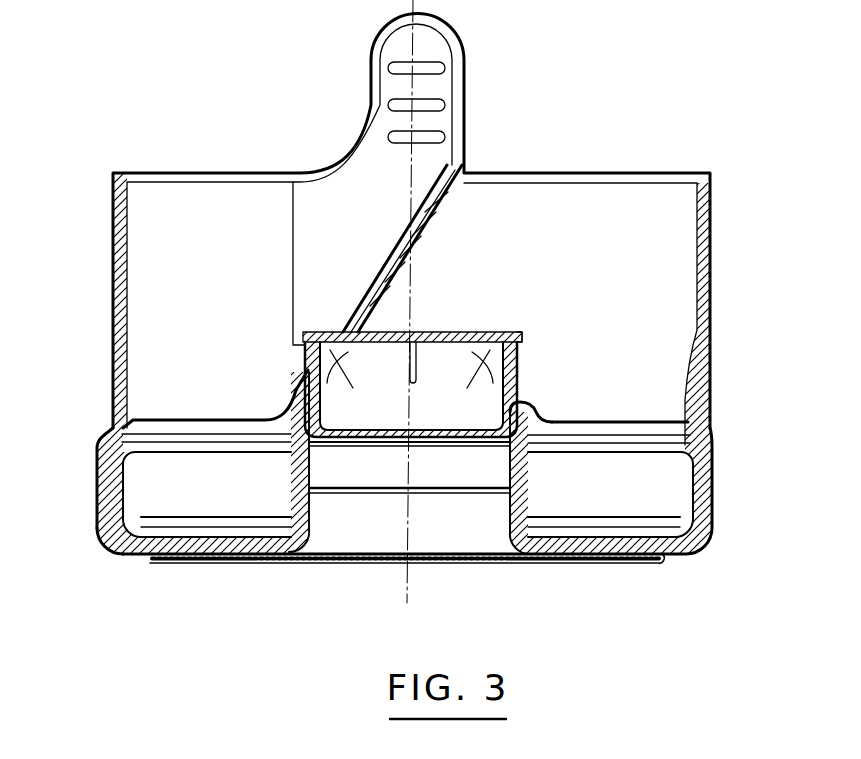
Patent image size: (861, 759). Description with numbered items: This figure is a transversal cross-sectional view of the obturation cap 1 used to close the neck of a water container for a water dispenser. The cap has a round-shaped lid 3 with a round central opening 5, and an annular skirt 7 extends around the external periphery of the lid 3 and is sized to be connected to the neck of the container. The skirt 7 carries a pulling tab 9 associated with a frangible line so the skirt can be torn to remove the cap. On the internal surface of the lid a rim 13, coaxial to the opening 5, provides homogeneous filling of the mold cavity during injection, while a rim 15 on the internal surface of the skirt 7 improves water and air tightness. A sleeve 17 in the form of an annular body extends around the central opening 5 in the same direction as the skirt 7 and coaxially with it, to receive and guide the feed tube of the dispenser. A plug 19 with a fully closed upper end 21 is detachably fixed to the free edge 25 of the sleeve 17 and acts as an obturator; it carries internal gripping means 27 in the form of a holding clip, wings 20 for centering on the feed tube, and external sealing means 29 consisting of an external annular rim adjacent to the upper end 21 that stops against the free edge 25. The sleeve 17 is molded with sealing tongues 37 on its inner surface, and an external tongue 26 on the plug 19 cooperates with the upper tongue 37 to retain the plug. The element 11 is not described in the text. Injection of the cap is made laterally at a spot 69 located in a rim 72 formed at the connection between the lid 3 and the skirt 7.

The obturation cap 1 is at (187, 71).
The lid 3 is at (623, 563).
The central opening 5 is at (359, 563).
The annular skirt 7 is at (710, 272).
The pulling tab 9 is at (437, 87).
The inclined strut 11 is at (437, 212).
The rim 13 is at (245, 522).
The rim 15 is at (140, 428).
The sleeve 17 is at (495, 509).
The plug 19 is at (502, 397).
The wings 20 is at (473, 358).
The upper end 21 is at (440, 332).
The free edge 25 is at (524, 408).
The external tongue 26 is at (300, 375).
The internal gripping means 27 is at (347, 446).
The external sealing means 29 is at (522, 333).
The sealing tongues 37 is at (431, 488).
The injection spot 69 is at (118, 545).
The rim 72 is at (112, 522).